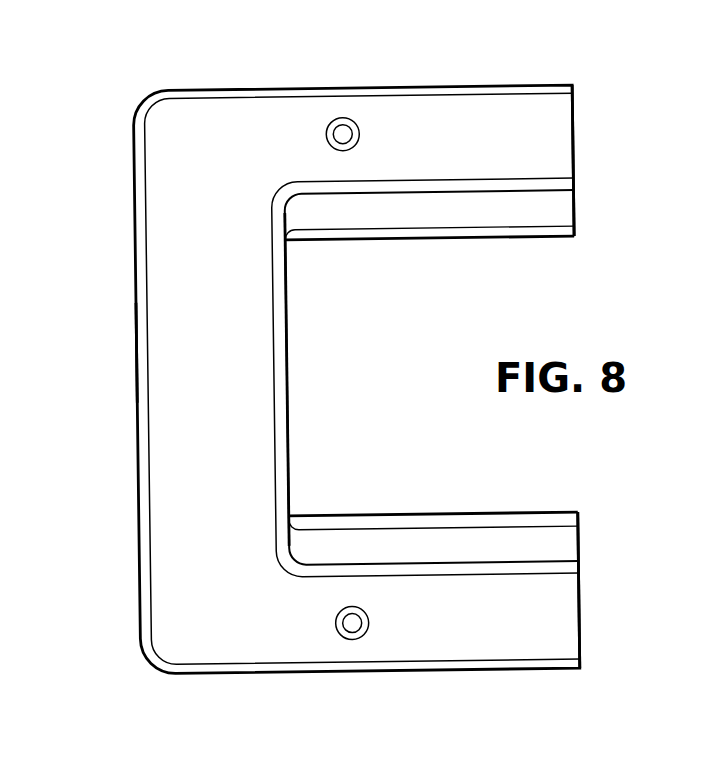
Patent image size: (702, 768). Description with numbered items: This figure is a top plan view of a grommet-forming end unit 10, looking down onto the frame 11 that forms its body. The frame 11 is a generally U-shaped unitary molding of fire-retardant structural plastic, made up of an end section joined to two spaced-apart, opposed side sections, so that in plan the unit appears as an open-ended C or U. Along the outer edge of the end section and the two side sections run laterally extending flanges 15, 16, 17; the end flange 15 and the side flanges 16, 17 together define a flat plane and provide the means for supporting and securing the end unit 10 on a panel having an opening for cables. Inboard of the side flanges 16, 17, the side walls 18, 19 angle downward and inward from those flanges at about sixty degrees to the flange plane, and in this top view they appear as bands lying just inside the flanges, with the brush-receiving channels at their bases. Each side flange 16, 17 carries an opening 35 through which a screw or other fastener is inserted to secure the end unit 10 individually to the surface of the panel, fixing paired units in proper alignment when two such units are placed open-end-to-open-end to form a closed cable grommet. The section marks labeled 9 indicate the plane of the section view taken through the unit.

The section line 9- 9 is at (342, 45).
The grommet-forming end unit 10 is at (207, 395).
The frame 11 is at (164, 348).
The flange 15 is at (157, 275).
The side flange 16 is at (448, 642).
The side flange 17 is at (460, 113).
The side wall 18 is at (415, 542).
The side wall 19 is at (398, 213).
The openings 35 is at (365, 623).